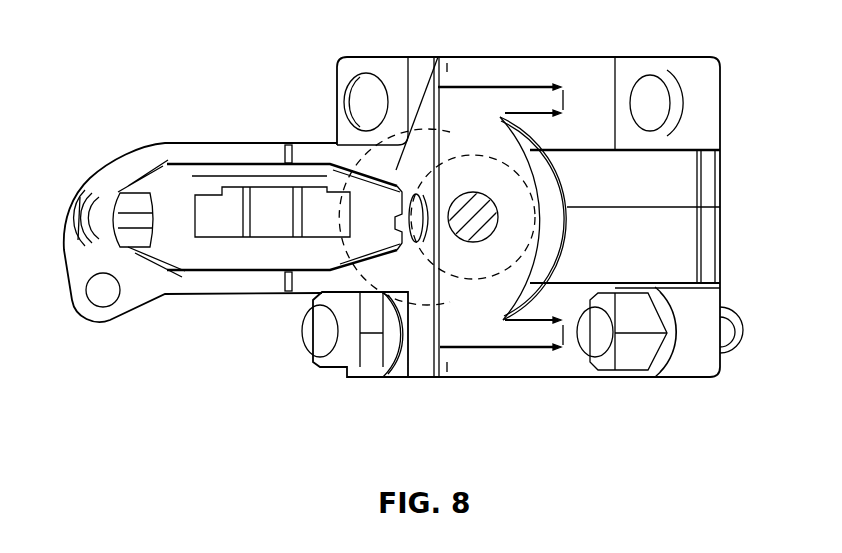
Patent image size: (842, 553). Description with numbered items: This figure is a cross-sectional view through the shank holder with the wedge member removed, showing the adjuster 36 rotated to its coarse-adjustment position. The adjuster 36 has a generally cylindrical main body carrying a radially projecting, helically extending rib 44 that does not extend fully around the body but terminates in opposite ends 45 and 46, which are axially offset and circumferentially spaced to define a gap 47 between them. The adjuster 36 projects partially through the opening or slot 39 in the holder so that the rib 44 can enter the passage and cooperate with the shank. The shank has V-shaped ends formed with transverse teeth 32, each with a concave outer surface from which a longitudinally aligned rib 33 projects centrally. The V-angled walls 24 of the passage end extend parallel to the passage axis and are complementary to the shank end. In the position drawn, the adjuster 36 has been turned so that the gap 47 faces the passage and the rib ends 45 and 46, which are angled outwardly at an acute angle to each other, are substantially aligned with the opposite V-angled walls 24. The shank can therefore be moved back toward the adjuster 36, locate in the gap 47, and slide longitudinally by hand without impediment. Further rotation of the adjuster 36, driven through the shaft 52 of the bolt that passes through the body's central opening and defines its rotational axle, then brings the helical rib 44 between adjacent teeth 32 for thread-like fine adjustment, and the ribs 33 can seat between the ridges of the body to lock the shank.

The V-angled walls 24 is at (437, 59).
The teeth 32 is at (342, 167).
The rib 33 is at (395, 212).
The adjuster 36 is at (568, 178).
The opening or slot 39 is at (425, 195).
The helically extending rib 44 is at (720, 207).
The end of rib 45 is at (407, 180).
The end of rib 46 is at (410, 255).
The gap 47 is at (403, 190).
The shaft 52 is at (497, 233).